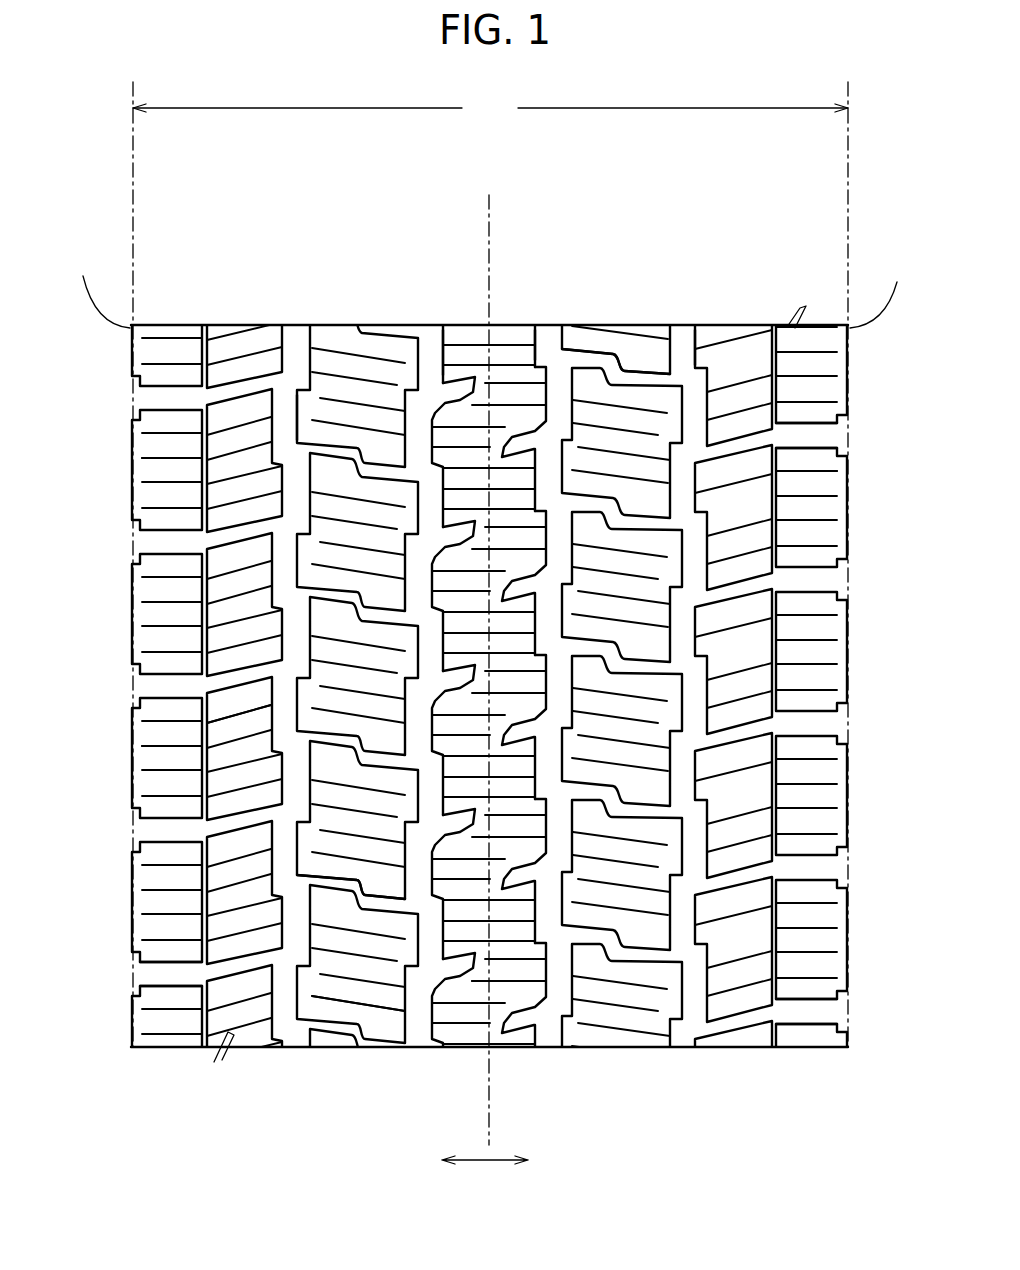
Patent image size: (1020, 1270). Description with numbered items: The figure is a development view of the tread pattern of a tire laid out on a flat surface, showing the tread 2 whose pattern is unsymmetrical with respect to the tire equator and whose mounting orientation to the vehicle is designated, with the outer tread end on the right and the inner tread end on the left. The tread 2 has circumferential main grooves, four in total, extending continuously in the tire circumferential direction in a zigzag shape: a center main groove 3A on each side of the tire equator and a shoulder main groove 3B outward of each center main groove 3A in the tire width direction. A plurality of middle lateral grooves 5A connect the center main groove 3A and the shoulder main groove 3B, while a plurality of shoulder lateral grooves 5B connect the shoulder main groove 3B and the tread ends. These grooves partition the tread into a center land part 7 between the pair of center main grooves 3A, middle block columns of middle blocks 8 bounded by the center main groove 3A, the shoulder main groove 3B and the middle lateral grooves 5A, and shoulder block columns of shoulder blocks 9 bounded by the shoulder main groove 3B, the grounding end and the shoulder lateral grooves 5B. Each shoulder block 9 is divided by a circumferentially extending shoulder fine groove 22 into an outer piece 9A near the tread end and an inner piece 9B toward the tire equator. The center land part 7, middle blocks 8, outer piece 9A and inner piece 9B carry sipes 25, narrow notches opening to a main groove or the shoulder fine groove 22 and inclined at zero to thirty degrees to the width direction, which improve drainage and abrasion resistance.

The tread 2 is at (763, 1103).
The center main groove 3A is at (432, 343).
The shoulder main groove 3B is at (300, 343).
The middle lateral groove 5A is at (666, 381).
The shoulder lateral groove 5B is at (162, 975).
The center land part 7 is at (471, 352).
The middle block 8 is at (340, 343).
The shoulder block 9 is at (267, 237).
The outer piece 9A is at (171, 412).
The inner piece 9B is at (249, 408).
The shoulder fine groove 22 is at (195, 465).
The sipe 25 is at (247, 705).